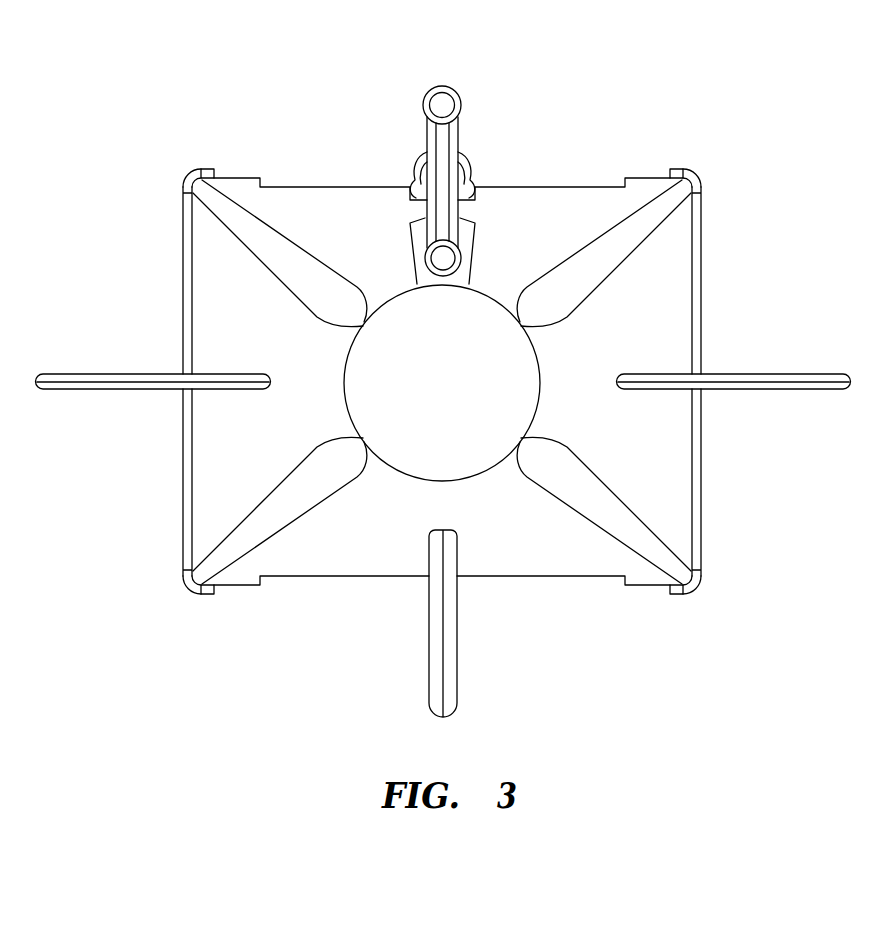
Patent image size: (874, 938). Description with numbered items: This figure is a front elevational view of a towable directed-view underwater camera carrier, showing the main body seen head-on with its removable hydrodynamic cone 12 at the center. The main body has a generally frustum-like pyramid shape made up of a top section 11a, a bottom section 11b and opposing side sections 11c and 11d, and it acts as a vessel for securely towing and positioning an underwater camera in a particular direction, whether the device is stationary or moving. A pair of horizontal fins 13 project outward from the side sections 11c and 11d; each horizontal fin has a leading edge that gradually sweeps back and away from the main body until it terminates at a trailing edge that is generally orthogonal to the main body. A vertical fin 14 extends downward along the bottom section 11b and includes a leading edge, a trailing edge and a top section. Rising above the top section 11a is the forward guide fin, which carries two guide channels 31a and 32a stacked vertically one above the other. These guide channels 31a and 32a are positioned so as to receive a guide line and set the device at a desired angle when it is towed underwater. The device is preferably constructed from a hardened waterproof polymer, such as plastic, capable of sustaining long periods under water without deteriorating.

The top section 11a is at (537, 251).
The bottom section 11b is at (482, 517).
The side section 11c is at (322, 423).
The side section 11d is at (600, 391).
The removable hydrodynamic cone 12 is at (453, 392).
The horizontal fins 13 is at (107, 373).
The vertical fin 14 is at (447, 657).
The guide channel 31a is at (450, 92).
The guide channel 32a is at (422, 252).